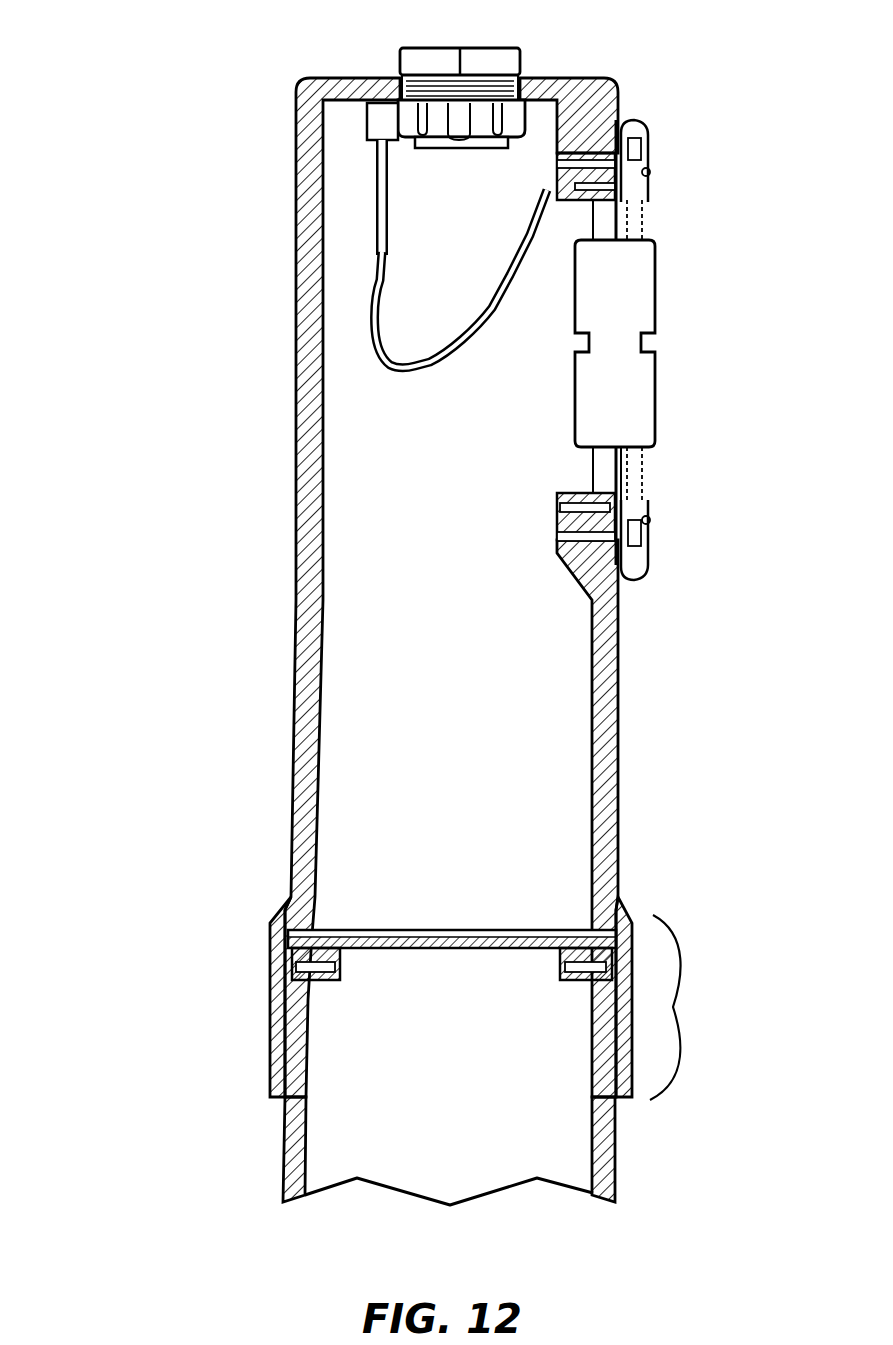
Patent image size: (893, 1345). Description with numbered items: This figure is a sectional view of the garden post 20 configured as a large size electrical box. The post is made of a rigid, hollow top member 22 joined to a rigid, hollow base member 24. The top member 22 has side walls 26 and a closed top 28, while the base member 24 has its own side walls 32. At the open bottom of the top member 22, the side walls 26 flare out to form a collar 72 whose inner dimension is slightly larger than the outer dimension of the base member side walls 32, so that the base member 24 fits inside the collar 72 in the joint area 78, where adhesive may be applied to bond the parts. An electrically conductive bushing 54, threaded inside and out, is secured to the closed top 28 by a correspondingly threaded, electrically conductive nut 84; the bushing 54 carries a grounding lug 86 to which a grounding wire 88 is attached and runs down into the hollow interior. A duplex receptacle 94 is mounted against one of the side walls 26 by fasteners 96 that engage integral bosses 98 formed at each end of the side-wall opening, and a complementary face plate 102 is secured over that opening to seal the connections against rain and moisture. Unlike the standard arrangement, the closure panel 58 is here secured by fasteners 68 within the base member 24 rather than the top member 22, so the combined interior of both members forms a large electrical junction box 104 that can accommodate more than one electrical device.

The garden post 20 is at (160, 618).
The top member 22 is at (297, 393).
The base member 24 is at (618, 1118).
The side walls 26 is at (300, 240).
The closed top 28 is at (584, 78).
The side walls 32 is at (293, 1155).
The electrically conductive bushing 54 is at (491, 58).
The closure panel 58 is at (430, 952).
The fasteners 68 is at (321, 976).
The collar 72 is at (269, 1007).
The joint area 78 is at (673, 1007).
The nut 84 is at (487, 118).
The grounding lug 86 is at (377, 128).
The grounding wire 88 is at (374, 290).
The duplex receptacle 94 is at (645, 310).
The fasteners 96 is at (640, 155).
The integral bosses 98 is at (560, 170).
The face plate 102 is at (648, 468).
The large electrical junction box 104 is at (470, 638).